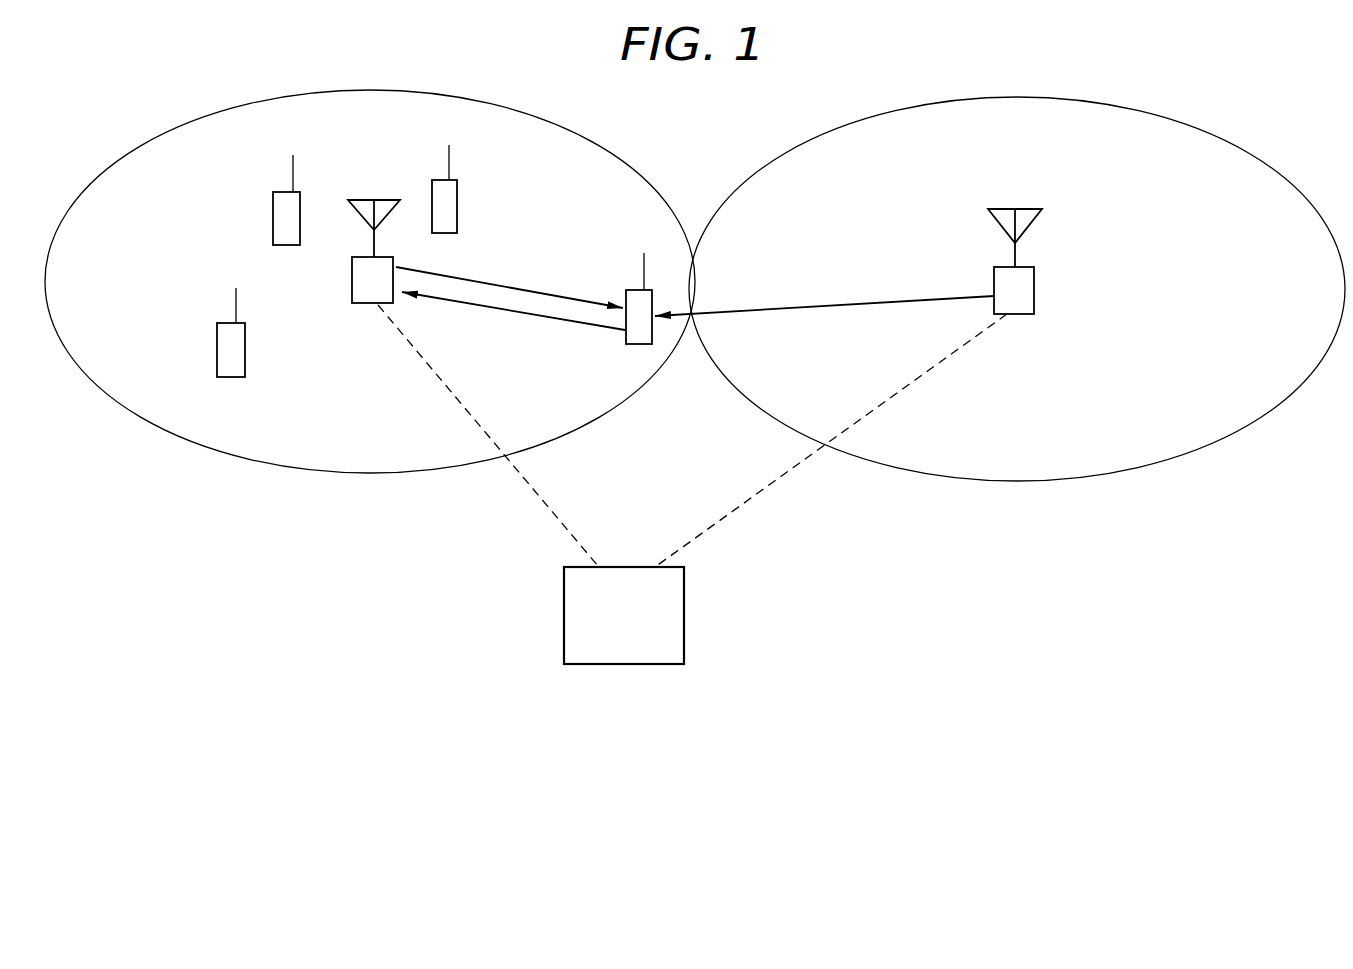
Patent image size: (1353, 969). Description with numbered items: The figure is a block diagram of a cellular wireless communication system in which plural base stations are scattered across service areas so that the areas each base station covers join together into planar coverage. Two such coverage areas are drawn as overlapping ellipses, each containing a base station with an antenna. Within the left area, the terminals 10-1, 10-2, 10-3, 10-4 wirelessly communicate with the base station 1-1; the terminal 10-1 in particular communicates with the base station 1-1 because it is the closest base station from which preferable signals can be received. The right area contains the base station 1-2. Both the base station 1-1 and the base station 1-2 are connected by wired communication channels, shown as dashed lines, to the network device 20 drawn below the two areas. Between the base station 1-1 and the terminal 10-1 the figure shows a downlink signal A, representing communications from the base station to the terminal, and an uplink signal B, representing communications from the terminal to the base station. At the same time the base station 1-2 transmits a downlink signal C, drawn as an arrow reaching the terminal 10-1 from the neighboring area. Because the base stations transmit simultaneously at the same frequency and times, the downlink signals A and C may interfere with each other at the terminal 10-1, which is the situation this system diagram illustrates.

The base station 1-1 is at (352, 283).
The base station 1-2 is at (1034, 282).
The terminal 10-1 is at (636, 345).
The terminal 10-2 is at (217, 330).
The terminal 10-3 is at (273, 198).
The terminal 10-4 is at (457, 192).
The network device 20 is at (684, 617).
The downlink signal A is at (500, 283).
The uplink signal B is at (527, 314).
The downlink signal C is at (776, 302).